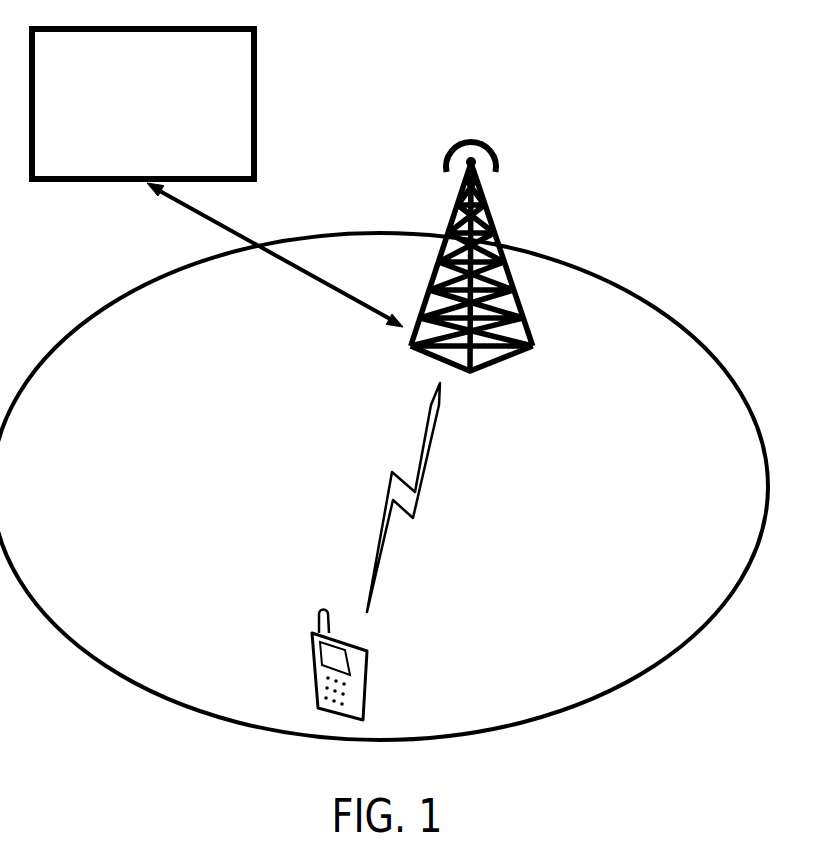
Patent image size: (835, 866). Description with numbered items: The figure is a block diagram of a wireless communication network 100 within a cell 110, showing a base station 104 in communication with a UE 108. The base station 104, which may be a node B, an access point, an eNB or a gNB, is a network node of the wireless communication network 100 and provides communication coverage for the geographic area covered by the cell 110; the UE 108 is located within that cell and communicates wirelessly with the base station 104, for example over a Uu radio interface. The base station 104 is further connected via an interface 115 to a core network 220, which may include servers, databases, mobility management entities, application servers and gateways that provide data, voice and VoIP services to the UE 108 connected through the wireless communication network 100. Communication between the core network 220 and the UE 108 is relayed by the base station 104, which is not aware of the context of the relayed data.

The wireless communication network 100 is at (630, 140).
The base station 104 is at (408, 355).
The UE 108 is at (377, 677).
The cell 110 is at (681, 321).
The interface 115 is at (230, 227).
The core network 220 is at (143, 104).